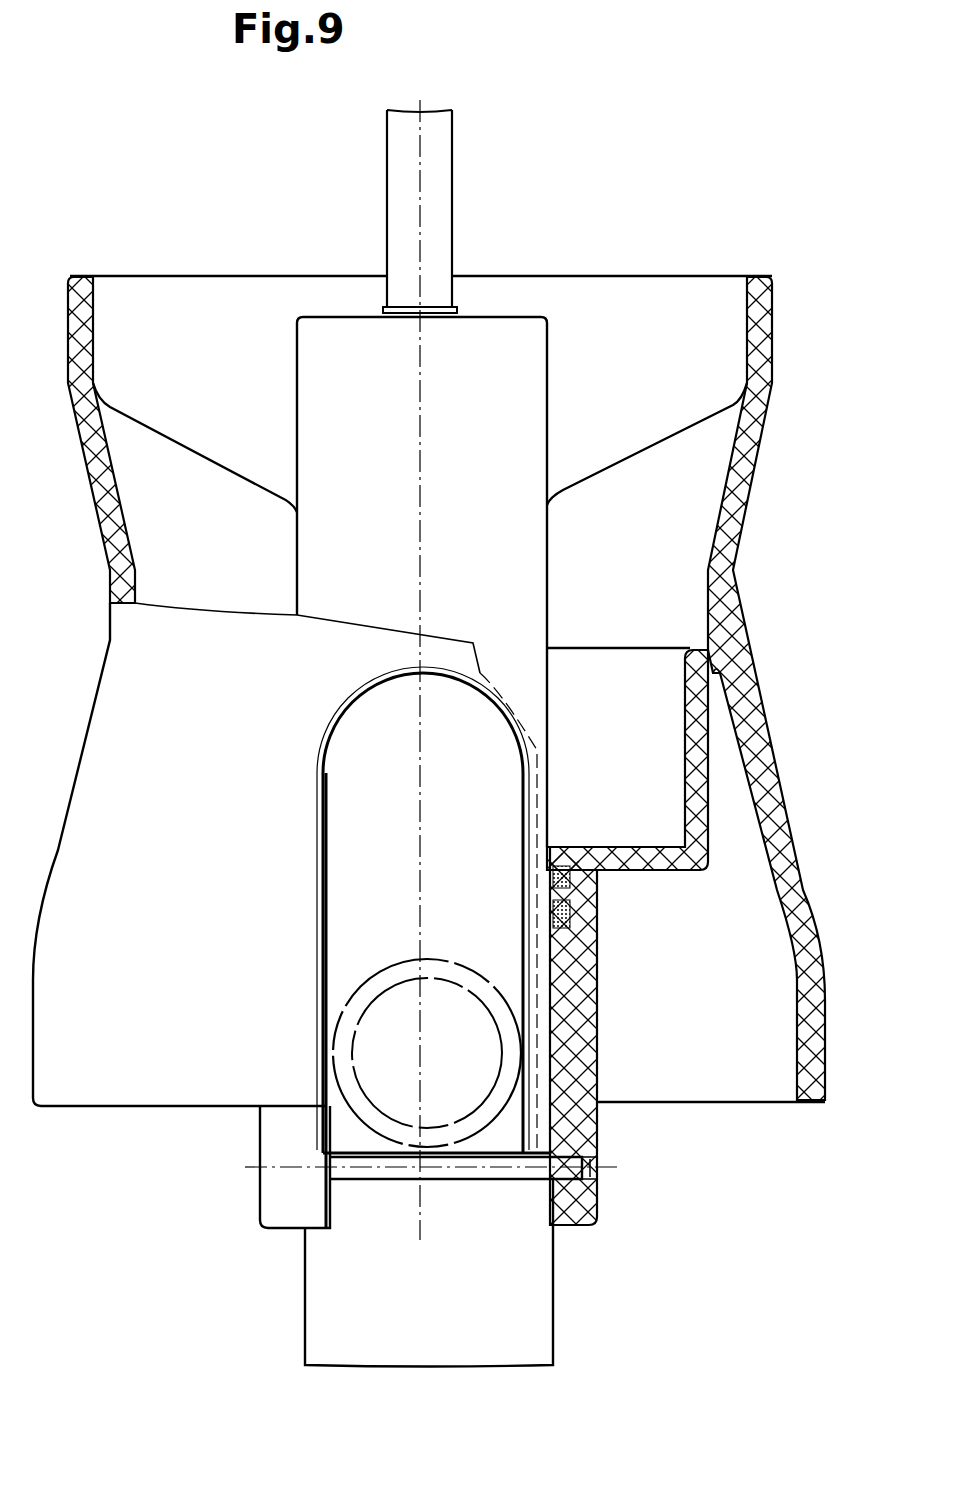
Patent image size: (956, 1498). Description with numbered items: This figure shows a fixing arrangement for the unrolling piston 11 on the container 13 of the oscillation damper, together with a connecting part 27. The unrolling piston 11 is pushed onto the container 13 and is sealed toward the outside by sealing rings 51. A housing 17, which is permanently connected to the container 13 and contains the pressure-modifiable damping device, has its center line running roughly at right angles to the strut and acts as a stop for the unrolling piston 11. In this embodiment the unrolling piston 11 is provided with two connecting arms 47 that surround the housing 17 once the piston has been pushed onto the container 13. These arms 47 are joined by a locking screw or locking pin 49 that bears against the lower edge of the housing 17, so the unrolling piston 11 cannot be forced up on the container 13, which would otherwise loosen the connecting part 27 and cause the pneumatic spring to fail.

The unrolling piston 11 is at (745, 700).
The connecting part 27 is at (480, 810).
The sealing rings 51 is at (628, 876).
The housing 17 is at (493, 980).
The connecting arms 47 is at (282, 1130).
The locking pin 49 is at (513, 1170).
The container 13 is at (522, 1323).